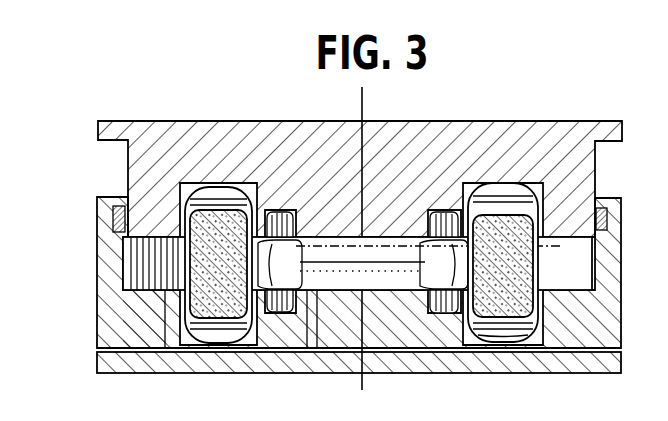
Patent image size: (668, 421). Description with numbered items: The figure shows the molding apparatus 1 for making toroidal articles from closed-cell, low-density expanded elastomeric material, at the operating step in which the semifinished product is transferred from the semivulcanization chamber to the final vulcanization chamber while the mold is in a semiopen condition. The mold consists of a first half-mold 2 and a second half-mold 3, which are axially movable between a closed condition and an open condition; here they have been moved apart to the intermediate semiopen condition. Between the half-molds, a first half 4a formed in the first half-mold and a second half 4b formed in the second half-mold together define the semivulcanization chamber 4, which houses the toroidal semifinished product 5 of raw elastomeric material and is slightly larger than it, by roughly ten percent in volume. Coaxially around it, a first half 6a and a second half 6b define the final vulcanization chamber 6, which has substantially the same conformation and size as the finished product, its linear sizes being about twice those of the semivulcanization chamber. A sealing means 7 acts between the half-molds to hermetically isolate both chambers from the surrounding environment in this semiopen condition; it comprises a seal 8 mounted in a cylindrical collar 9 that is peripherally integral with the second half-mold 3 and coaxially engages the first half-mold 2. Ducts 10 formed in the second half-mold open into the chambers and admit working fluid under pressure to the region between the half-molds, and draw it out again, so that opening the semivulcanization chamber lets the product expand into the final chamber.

The molding apparatus 1 is at (131, 92).
The first half-mold 2 is at (251, 120).
The second half-mold 3 is at (97, 326).
The semivulcanization chamber 4 is at (284, 211).
The first half of semivulcanization chamber 4a is at (446, 212).
The second half of semivulcanization chamber 4b is at (436, 312).
The toroidal semifinished product 5 is at (190, 262).
The final vulcanization chamber 6 is at (236, 187).
The first half of final vulcanization chamber 6a is at (503, 190).
The second half of final vulcanization chamber 6b is at (534, 328).
The sealing means 7 is at (608, 200).
The seal 8 is at (607, 219).
The cylindrical collar 9 is at (112, 256).
The ducts 10 is at (166, 314).